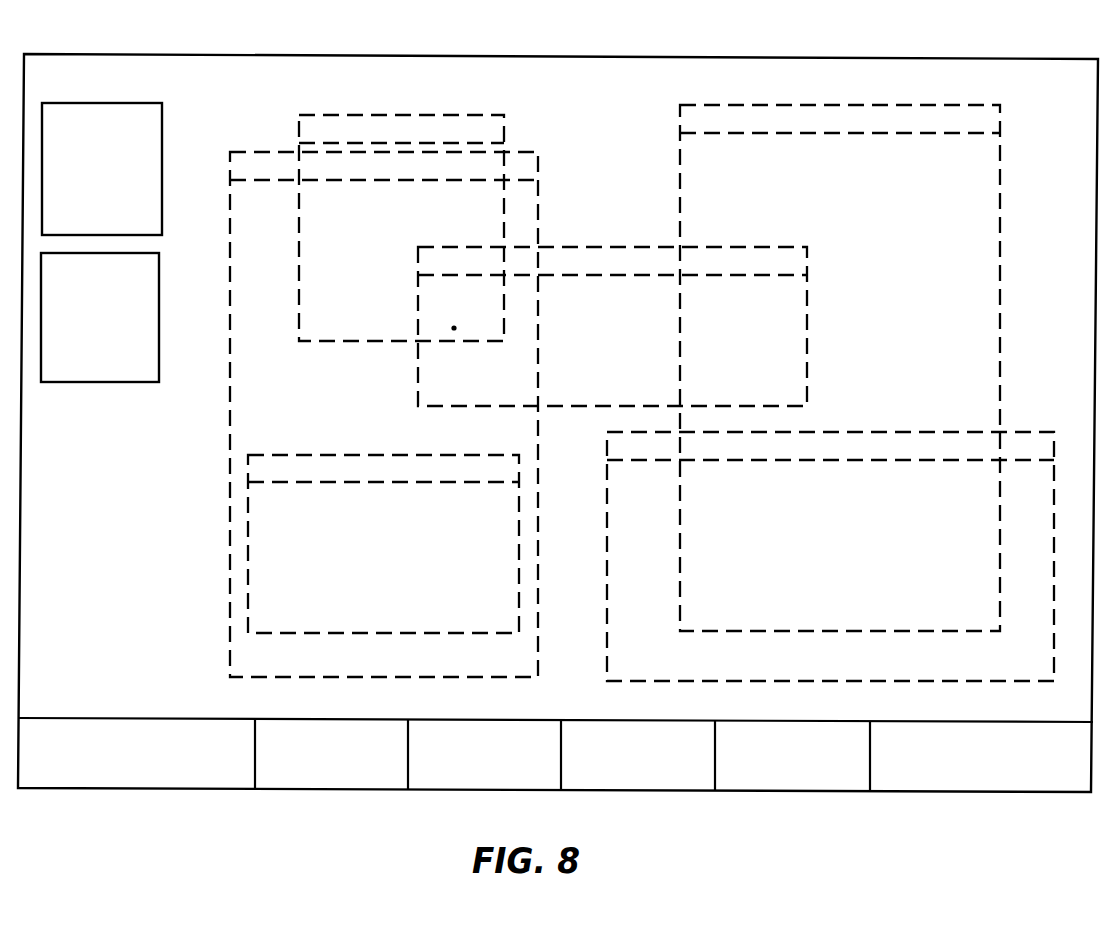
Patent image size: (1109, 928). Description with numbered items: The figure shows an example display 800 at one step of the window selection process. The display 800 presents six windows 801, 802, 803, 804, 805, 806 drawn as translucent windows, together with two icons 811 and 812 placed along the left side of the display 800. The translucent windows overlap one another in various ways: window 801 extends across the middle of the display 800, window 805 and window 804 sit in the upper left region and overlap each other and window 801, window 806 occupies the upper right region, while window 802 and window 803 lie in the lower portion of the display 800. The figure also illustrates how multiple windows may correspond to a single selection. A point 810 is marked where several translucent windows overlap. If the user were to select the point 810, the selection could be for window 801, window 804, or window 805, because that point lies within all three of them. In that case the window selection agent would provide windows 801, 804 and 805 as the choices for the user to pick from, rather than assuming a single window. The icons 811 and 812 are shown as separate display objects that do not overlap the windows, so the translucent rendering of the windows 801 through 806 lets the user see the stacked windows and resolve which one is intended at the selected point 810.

The display 800 is at (590, 57).
The window 801 is at (666, 247).
The window 802 is at (333, 455).
The window 803 is at (1012, 432).
The window 804 is at (538, 190).
The window 805 is at (440, 115).
The window 806 is at (866, 105).
The point 810 is at (470, 316).
The icon 811 is at (102, 169).
The icon 812 is at (100, 317).